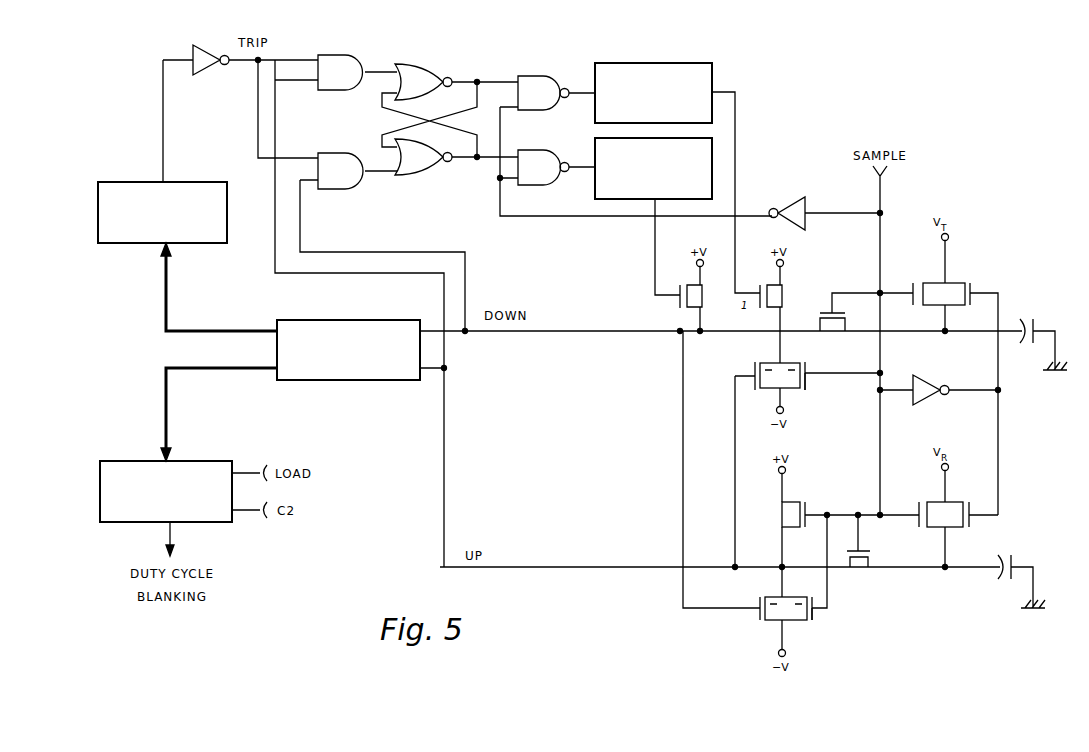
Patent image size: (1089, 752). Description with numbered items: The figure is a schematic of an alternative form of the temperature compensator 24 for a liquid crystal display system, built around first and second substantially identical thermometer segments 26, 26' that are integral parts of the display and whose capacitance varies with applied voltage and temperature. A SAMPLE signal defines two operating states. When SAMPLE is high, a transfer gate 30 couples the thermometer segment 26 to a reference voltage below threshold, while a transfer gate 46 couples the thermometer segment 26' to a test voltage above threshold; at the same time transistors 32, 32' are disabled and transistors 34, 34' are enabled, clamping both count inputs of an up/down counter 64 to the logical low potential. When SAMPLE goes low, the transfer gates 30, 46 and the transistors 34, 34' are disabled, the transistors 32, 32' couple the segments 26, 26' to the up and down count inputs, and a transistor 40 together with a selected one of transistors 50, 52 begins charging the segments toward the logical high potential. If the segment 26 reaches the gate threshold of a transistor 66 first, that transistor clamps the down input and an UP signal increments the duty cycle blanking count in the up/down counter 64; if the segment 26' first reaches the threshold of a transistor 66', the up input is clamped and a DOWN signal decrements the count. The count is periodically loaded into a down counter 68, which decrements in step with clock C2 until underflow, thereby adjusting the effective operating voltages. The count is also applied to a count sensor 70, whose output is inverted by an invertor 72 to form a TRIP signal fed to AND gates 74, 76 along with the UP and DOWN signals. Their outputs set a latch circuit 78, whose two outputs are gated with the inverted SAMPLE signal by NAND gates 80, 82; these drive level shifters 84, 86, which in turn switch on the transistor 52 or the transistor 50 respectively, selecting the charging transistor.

The temperature compensator 24 is at (384, 540).
The thermometer segment 26 is at (1031, 568).
The thermometer segment 26' is at (1048, 323).
The transfer gate 30 is at (928, 502).
The transistor 32 is at (872, 575).
The transistor 32' is at (833, 294).
The transistor 34 is at (838, 628).
The transistor 34' is at (819, 392).
The transistor 40 is at (790, 502).
The transfer gate 46 is at (928, 283).
The transistor 50 is at (690, 283).
The transistor 52 is at (770, 283).
The up/down counter 64 is at (355, 320).
The transistor 66 is at (748, 367).
The transistor 66' is at (764, 622).
The down counter 68 is at (138, 461).
The count sensor 70 is at (130, 182).
The invertor 72 is at (205, 45).
The AND gate 74 is at (346, 56).
The AND gate 76 is at (345, 153).
The latch circuit 78 is at (424, 64).
The NAND gate 80 is at (545, 77).
The NAND gate 82 is at (552, 186).
The level shifter 84 is at (660, 63).
The level shifter 86 is at (595, 152).